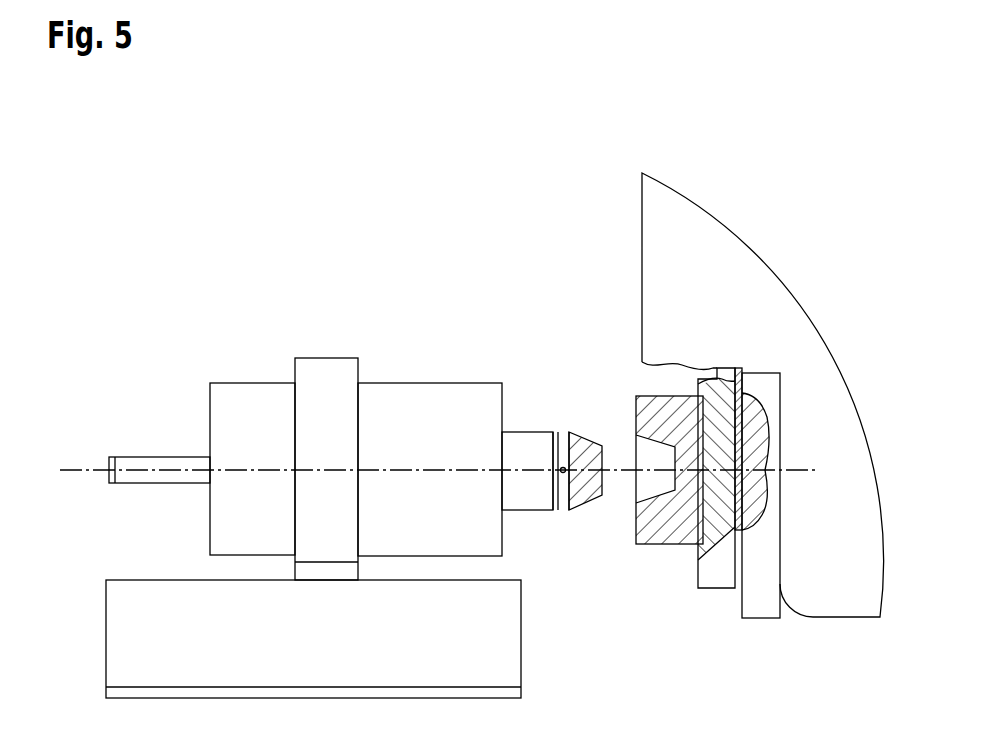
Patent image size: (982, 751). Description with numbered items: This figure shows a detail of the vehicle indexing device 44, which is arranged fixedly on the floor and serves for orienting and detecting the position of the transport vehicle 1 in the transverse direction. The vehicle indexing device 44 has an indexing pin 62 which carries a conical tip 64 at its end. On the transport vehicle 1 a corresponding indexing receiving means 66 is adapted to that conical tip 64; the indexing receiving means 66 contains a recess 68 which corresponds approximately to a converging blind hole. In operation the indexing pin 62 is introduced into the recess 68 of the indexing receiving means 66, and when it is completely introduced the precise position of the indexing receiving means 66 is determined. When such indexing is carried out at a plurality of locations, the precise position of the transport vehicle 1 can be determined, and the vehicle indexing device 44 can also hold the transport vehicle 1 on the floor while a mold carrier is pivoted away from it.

The transport vehicle 1 is at (807, 357).
The vehicle indexing device 44 is at (521, 222).
The indexing pin 62 is at (536, 450).
The conical tip 64 is at (593, 490).
The indexing receiving means 66 is at (682, 416).
The recess 68 is at (653, 480).